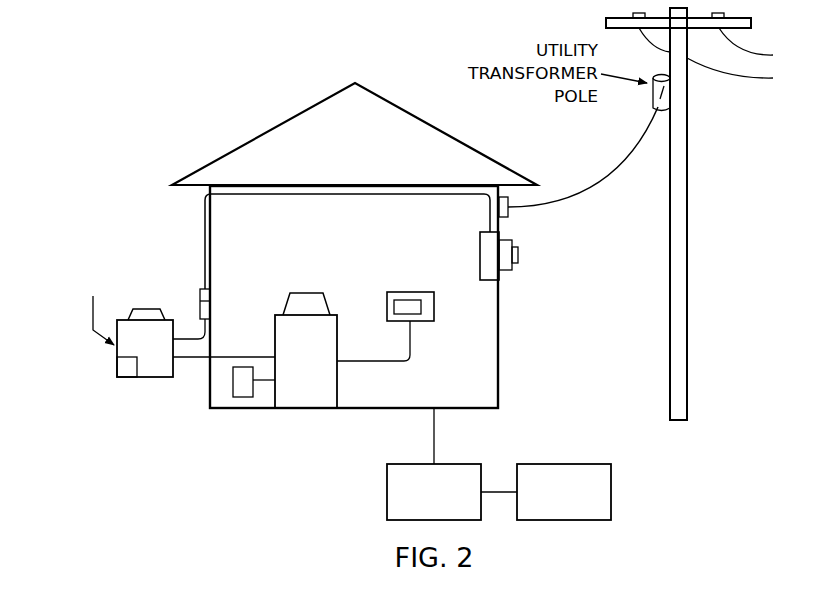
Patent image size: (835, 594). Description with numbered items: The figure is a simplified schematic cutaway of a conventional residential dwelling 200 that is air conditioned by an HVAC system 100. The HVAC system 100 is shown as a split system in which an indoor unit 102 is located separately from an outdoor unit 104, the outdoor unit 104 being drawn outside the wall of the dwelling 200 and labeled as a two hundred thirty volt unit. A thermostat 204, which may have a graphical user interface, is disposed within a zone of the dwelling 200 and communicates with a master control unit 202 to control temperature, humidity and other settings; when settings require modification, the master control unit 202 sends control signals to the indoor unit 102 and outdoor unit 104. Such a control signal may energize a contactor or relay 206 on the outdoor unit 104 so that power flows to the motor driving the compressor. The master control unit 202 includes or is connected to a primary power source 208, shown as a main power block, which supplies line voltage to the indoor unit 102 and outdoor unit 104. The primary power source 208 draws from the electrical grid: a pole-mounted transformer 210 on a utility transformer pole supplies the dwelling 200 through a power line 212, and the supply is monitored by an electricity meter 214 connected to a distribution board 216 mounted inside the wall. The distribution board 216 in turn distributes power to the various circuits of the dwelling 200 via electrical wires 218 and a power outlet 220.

The dwelling 200 is at (212, 59).
The HVAC system 100 is at (371, 229).
The indoor unit 102 is at (291, 369).
The outdoor unit 104 is at (86, 362).
The master control unit 202 is at (612, 503).
The thermostat 204 is at (401, 291).
The contactor or relay 206 is at (127, 371).
The primary power source 208 is at (386, 502).
The pole-mounted transformer 210 is at (733, 170).
The power line 212 is at (600, 170).
The electricity meter 214 is at (519, 256).
The distribution board 216 is at (479, 246).
The electrical wires 218 is at (285, 197).
The power outlet 220 is at (242, 399).